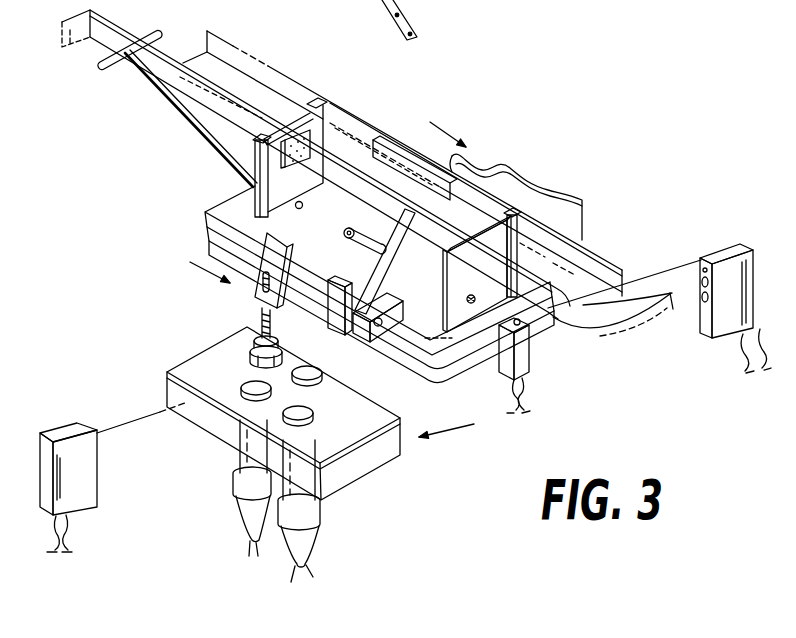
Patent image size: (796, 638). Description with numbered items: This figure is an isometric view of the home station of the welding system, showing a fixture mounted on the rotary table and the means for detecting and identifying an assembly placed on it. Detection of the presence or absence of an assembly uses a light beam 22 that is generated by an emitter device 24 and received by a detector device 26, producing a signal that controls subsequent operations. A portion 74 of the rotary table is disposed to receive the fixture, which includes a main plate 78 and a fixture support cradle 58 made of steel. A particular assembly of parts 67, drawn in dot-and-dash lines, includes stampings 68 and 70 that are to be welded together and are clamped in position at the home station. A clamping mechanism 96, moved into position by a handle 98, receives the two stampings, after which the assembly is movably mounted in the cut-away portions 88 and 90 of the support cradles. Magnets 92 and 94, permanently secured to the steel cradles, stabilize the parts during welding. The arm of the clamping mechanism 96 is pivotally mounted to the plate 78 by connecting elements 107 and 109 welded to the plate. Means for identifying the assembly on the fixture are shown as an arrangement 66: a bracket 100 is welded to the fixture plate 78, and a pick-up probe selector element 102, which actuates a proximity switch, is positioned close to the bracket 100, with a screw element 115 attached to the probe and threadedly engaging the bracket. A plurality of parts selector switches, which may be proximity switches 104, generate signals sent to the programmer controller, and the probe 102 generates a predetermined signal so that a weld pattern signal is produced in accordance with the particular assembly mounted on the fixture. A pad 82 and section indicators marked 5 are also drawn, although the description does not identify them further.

The section line 5- 5 is at (310, 186).
The light beam 22 is at (127, 425).
The emitter device 24 is at (98, 396).
The detector device 26 is at (765, 218).
The fixture support cradle 58 is at (518, 224).
The arrangement 66 is at (328, 413).
The assembly of parts 67 is at (354, 103).
The stamping 68 is at (609, 266).
The stamping 70 is at (667, 310).
The portion of the rotary table 74 is at (550, 338).
The main plate 78 is at (205, 213).
The pad 82 is at (286, 130).
The cut-away portion 88 is at (311, 107).
The cut-away portion 90 is at (507, 215).
The magnet 92 is at (283, 148).
The magnet 94 is at (450, 270).
The clamping mechanism 96 is at (376, 262).
The handle 98 is at (360, 234).
The bracket 100 is at (403, 25).
The pick-up probe selector element 102 is at (250, 353).
The proximity switches 104 is at (296, 482).
The connecting element 107 is at (377, 328).
The connecting element 109 is at (304, 318).
The screw element 115 is at (260, 323).